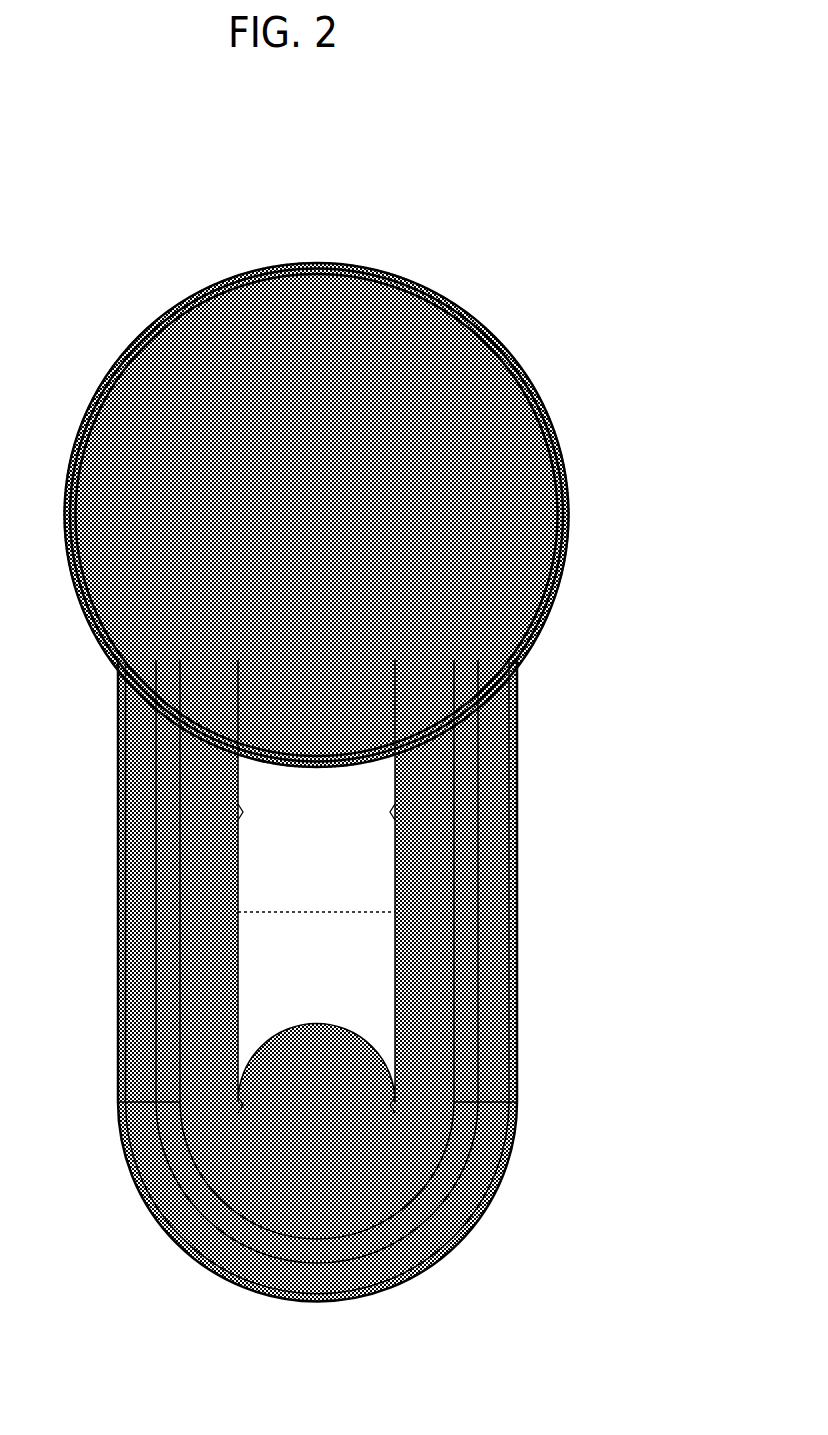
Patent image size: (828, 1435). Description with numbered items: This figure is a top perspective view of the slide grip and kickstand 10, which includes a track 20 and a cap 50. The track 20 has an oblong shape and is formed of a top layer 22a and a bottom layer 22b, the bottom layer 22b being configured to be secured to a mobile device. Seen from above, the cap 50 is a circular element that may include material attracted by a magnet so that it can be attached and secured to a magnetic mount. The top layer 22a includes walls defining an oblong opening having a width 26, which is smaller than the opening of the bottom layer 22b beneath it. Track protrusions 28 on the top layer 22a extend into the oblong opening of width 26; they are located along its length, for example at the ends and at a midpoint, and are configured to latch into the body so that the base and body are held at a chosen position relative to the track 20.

The slide grip and kickstand 10 is at (53, 217).
The track 20 is at (287, 1026).
The top layer 22a is at (231, 1038).
The bottom layer 22b is at (114, 1041).
The width 26 is at (395, 912).
The track protrusions 28 is at (393, 812).
The cap 50 is at (440, 502).